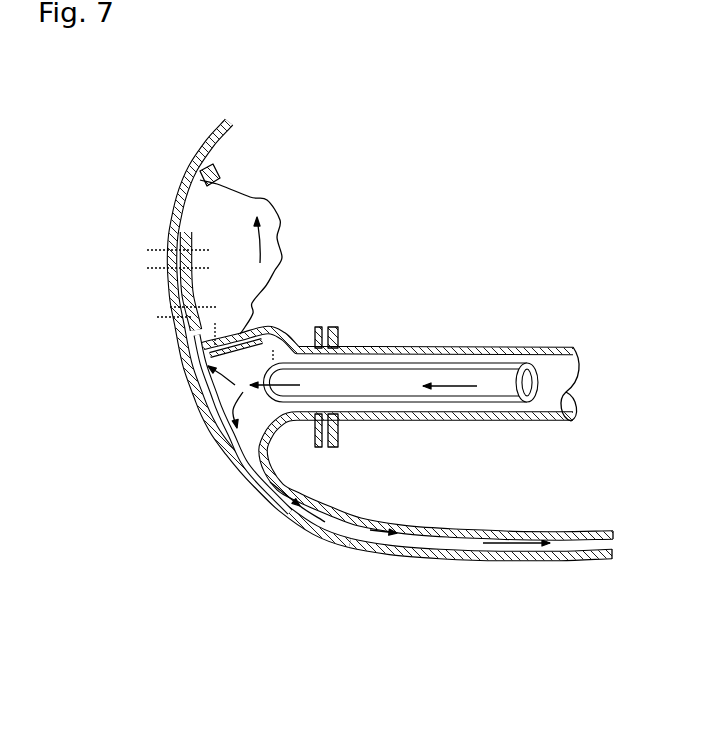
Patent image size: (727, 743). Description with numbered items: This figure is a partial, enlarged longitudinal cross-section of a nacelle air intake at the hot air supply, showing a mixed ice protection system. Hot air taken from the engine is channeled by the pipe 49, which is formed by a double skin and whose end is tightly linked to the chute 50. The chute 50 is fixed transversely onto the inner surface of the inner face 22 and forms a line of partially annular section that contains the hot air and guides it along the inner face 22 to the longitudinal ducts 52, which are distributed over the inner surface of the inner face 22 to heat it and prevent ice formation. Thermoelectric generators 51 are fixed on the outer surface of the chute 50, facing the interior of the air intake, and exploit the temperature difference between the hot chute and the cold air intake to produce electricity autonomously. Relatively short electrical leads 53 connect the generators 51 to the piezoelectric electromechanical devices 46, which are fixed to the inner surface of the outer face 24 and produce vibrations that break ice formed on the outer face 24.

The inner face 22 is at (568, 555).
The outer face 24 is at (172, 210).
The electromechanical devices 46 is at (193, 161).
The pipe 49 is at (500, 348).
The chute 50 is at (257, 423).
The thermoelectric generators 51 is at (206, 358).
The longitudinal ducts 52 is at (432, 540).
The electrical leads 53 is at (283, 223).